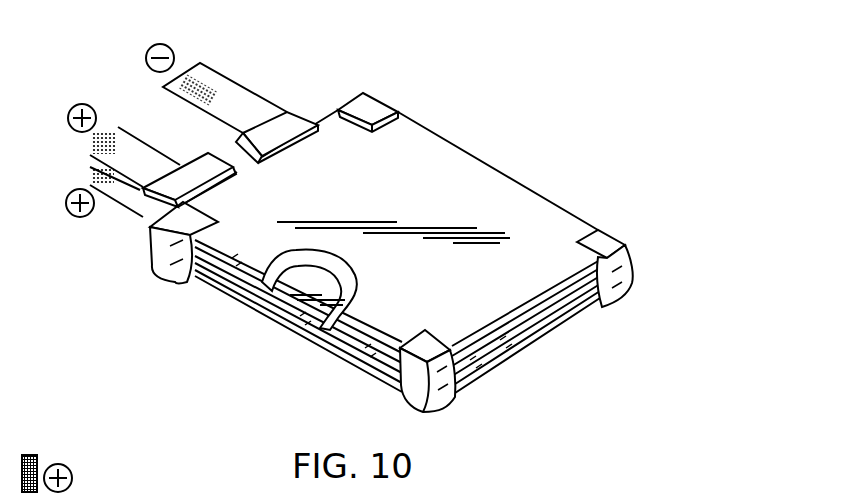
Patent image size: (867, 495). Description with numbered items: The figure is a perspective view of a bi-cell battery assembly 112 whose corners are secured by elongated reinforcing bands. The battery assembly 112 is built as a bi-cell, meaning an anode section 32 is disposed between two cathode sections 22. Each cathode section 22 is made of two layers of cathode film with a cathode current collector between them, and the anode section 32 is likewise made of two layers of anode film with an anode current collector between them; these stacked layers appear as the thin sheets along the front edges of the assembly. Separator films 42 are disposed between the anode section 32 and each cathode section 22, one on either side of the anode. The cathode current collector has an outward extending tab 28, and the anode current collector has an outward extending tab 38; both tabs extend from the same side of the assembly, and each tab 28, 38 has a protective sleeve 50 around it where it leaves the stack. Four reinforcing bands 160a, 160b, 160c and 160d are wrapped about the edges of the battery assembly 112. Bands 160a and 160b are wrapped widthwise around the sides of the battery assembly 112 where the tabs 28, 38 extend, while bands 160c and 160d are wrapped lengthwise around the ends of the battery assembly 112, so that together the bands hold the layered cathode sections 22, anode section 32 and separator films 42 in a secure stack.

The cathode section 22 is at (497, 187).
The cathode current collector tab 28 is at (97, 173).
The anode section 32 is at (272, 310).
The anode current collector tab 38 is at (223, 87).
The separator film 42 is at (350, 349).
The protective sleeve 50 is at (292, 115).
The battery assembly 112 is at (462, 143).
The reinforcing band 160a is at (158, 267).
The reinforcing band 160b is at (382, 98).
The reinforcing band 160c is at (445, 403).
The reinforcing band 160d is at (615, 303).